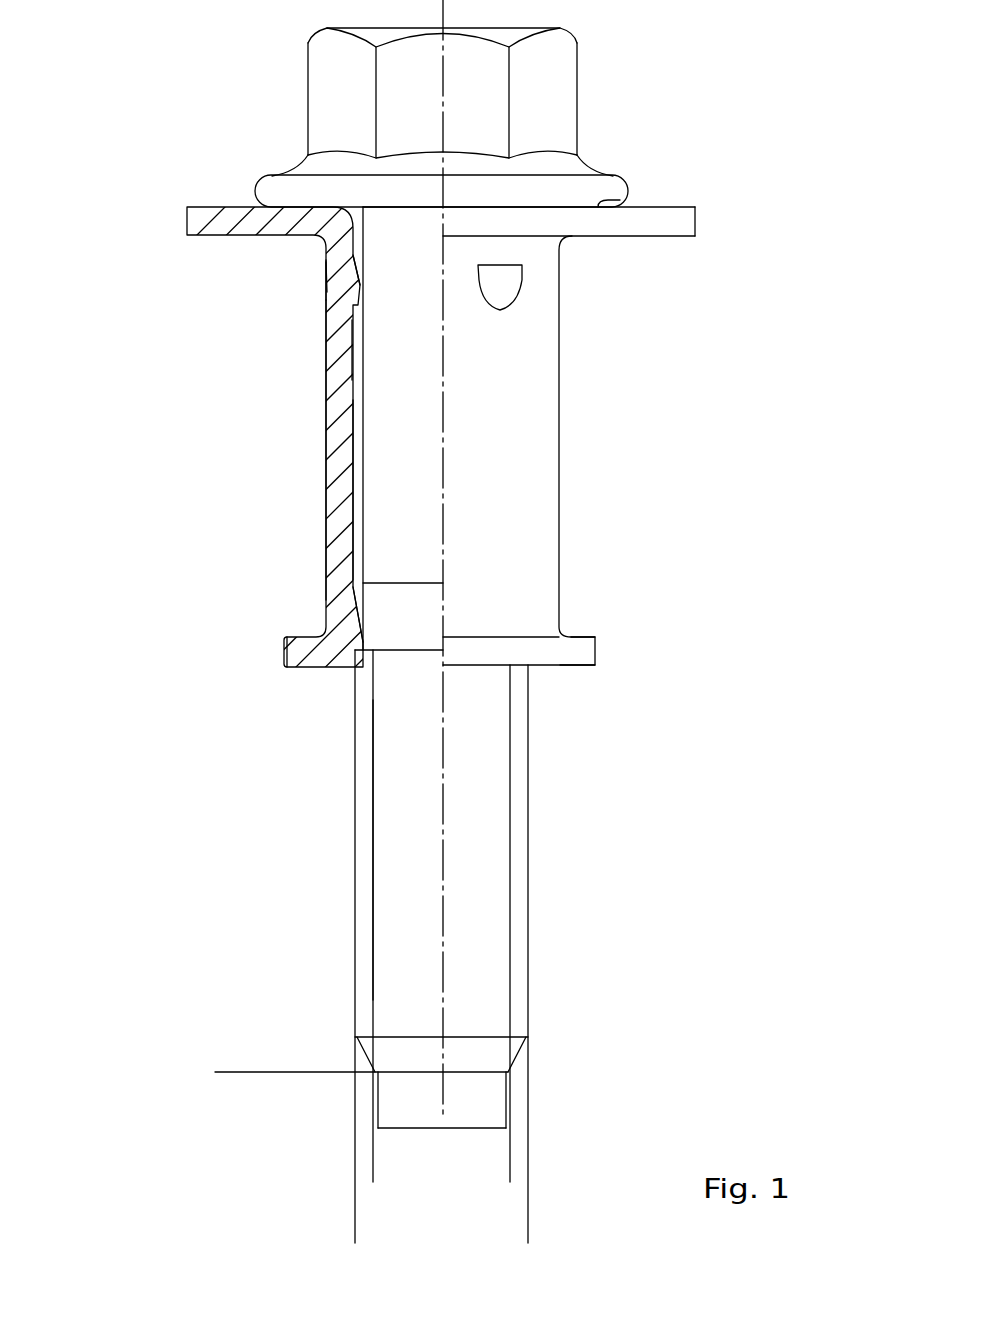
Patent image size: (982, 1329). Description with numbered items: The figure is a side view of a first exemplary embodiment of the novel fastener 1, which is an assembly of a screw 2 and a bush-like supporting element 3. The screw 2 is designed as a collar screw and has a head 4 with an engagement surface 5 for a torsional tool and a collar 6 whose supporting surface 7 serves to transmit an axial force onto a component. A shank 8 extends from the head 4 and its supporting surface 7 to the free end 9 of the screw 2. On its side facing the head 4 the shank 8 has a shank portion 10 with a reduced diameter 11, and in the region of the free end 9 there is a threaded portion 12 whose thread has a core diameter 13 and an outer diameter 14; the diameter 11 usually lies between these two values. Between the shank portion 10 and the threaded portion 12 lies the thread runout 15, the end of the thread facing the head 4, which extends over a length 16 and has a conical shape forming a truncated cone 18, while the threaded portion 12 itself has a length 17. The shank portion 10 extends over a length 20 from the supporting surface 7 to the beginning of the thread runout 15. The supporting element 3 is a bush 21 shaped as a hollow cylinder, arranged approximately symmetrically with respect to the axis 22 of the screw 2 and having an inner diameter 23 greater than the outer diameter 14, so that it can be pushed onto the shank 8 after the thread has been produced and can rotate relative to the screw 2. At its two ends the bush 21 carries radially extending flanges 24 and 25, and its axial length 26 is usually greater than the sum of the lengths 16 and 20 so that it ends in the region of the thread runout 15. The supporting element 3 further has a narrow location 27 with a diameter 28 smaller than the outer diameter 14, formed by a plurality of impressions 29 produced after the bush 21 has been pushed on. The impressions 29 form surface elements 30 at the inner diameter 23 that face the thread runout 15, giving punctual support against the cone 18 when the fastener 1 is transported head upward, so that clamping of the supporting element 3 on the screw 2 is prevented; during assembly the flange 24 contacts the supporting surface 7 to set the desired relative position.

The fastener 1 is at (672, 468).
The screw 2 is at (528, 775).
The supporting element 3 is at (561, 525).
The head 4 is at (533, 102).
The engagement surface 5 is at (555, 98).
The collar 6 is at (590, 193).
The supporting surface 7 is at (602, 204).
The shank 8 is at (407, 892).
The free end 9 is at (362, 1117).
The shank portion 10 is at (405, 407).
The diameter 11 is at (453, 495).
The threaded portion 12 is at (345, 865).
The core diameter 13 is at (510, 1173).
The outer diameter 14 is at (528, 1232).
The thread runout 15 is at (583, 611).
The length 16 is at (287, 650).
The length 17 is at (226, 1070).
The cone 18 is at (577, 590).
The length 20 is at (326, 582).
The bush 21 is at (342, 352).
The axis 22 is at (443, 444).
The inner diameter 23 is at (478, 535).
The flange 24 is at (436, 389).
The flange 25 is at (679, 697).
The length 26 is at (595, 665).
The narrow location 27 is at (318, 282).
The diameter 28 is at (473, 303).
The impressions 29 is at (498, 281).
The surface elements 30 is at (347, 297).